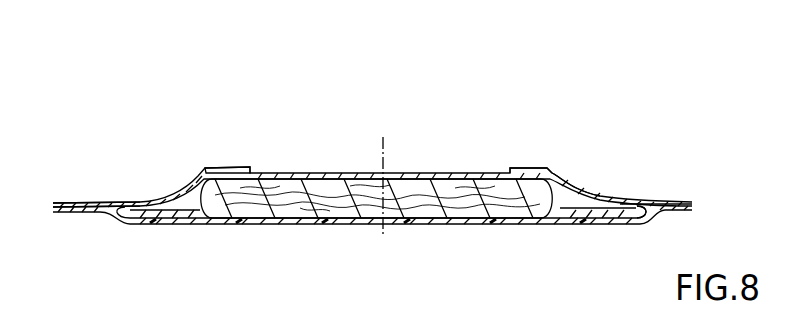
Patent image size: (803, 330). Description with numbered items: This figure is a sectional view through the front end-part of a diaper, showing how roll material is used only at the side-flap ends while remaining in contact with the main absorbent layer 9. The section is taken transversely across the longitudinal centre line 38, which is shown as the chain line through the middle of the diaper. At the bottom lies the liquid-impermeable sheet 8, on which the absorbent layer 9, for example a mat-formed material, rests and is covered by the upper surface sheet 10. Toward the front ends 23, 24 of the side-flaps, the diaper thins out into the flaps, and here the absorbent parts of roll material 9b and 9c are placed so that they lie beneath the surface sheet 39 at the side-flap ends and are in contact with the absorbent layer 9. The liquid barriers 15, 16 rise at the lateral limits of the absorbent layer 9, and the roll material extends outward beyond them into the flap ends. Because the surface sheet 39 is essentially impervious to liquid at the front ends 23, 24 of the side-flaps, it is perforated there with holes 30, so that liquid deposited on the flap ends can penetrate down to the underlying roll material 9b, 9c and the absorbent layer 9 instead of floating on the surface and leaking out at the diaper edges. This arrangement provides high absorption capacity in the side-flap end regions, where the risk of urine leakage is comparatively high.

The liquid-impermeable sheet 8 is at (340, 224).
The absorbent layer 9 is at (288, 183).
The absorbent part of roll material 9b is at (173, 224).
The absorbent part of roll material 9c is at (594, 225).
The upper surface sheet 10 is at (440, 173).
The liquid barrier 15 is at (212, 167).
The liquid barrier 16 is at (535, 168).
The front end of side-flap 23 is at (155, 204).
The front end of side-flap 24 is at (625, 205).
The holes 30 is at (581, 196).
The longitudinal centre line 38 is at (386, 138).
The surface sheet 39 is at (607, 201).